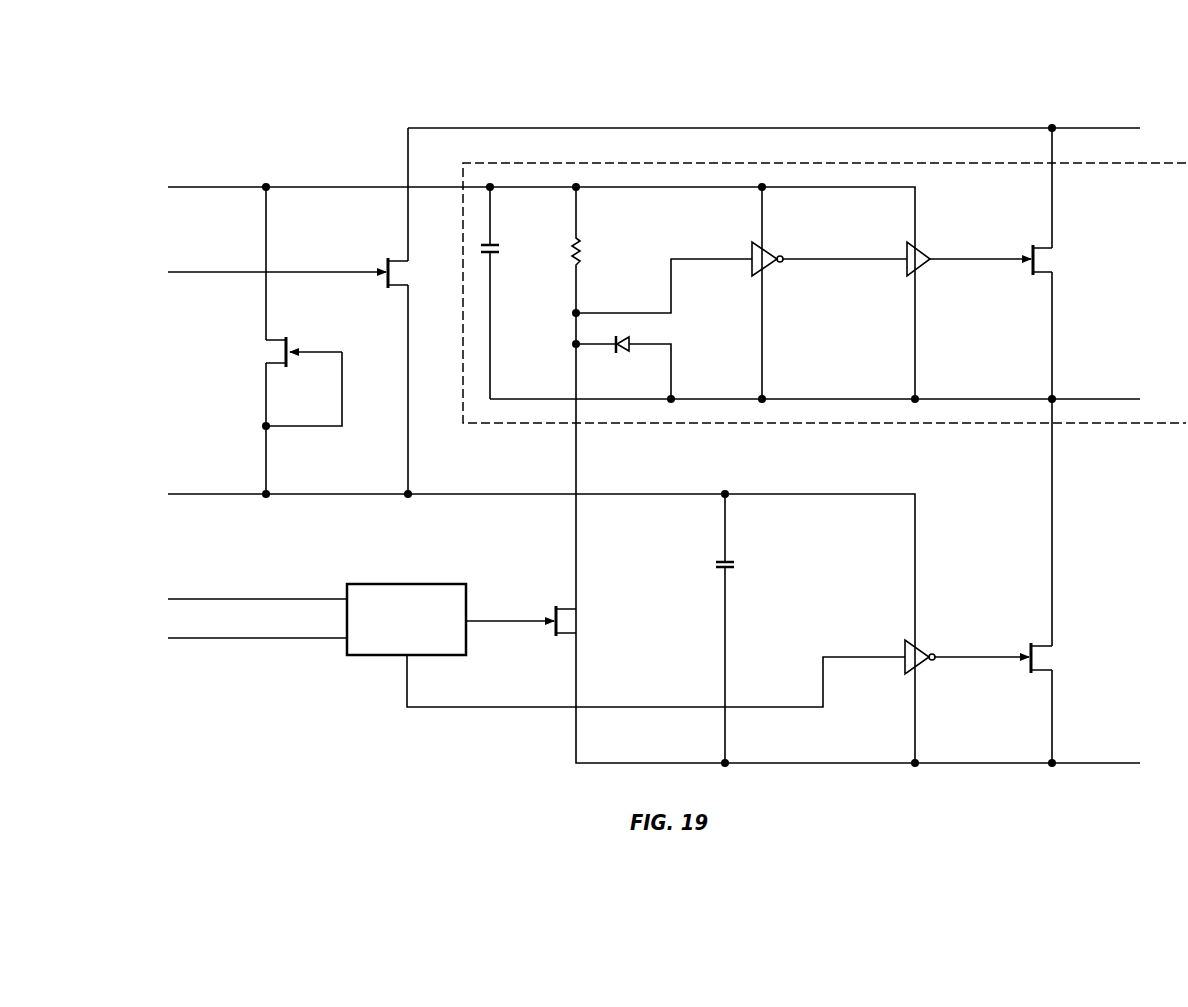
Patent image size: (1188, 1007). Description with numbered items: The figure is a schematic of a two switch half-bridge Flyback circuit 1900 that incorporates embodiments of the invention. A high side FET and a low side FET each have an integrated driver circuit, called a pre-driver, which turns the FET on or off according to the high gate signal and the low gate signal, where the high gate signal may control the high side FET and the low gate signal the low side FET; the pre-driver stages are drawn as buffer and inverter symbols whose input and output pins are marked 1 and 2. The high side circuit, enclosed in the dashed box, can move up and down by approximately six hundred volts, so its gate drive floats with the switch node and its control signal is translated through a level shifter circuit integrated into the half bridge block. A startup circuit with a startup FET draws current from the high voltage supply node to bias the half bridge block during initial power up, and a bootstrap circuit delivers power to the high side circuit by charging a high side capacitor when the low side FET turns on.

The two switch half-bridge Flyback circuit 1900 is at (344, 113).
The pre-driver input 1 is at (828, 453).
The pre-driver output 2 is at (904, 446).